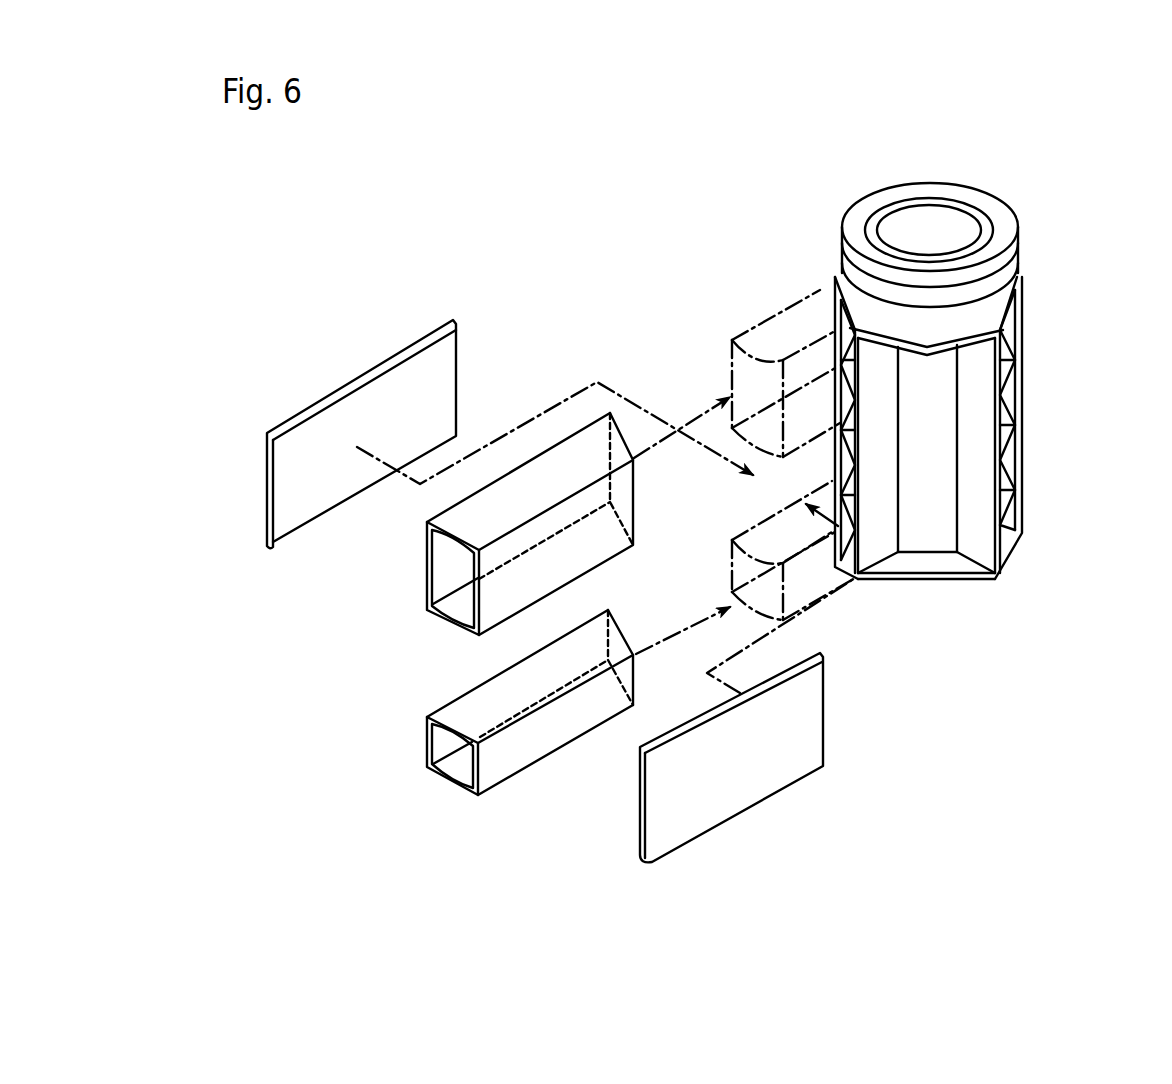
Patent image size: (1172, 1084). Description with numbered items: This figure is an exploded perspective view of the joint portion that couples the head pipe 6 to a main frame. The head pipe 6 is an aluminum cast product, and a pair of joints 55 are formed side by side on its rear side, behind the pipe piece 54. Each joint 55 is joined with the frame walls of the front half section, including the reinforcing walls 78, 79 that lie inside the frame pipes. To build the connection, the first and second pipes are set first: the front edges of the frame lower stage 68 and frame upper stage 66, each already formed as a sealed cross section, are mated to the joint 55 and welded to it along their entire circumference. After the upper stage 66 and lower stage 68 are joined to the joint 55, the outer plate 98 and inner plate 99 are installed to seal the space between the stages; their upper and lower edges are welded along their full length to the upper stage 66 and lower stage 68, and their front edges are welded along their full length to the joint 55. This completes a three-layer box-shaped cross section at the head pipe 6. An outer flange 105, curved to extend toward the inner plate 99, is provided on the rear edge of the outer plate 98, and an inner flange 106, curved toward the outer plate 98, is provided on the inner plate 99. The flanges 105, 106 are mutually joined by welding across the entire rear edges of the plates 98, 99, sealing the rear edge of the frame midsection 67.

The head pipe 6 is at (1005, 190).
The pipe piece 54 is at (1012, 262).
The joint 55 is at (828, 308).
The frame upper stage 66 is at (557, 440).
The frame midsection 67 is at (525, 589).
The frame lower stage 68 is at (543, 748).
The reinforcing wall 78 is at (503, 603).
The reinforcing wall 79 is at (450, 712).
The outer plate 98 is at (347, 383).
The inner plate 99 is at (770, 778).
The outer flange 105 is at (267, 493).
The inner flange 106 is at (648, 830).